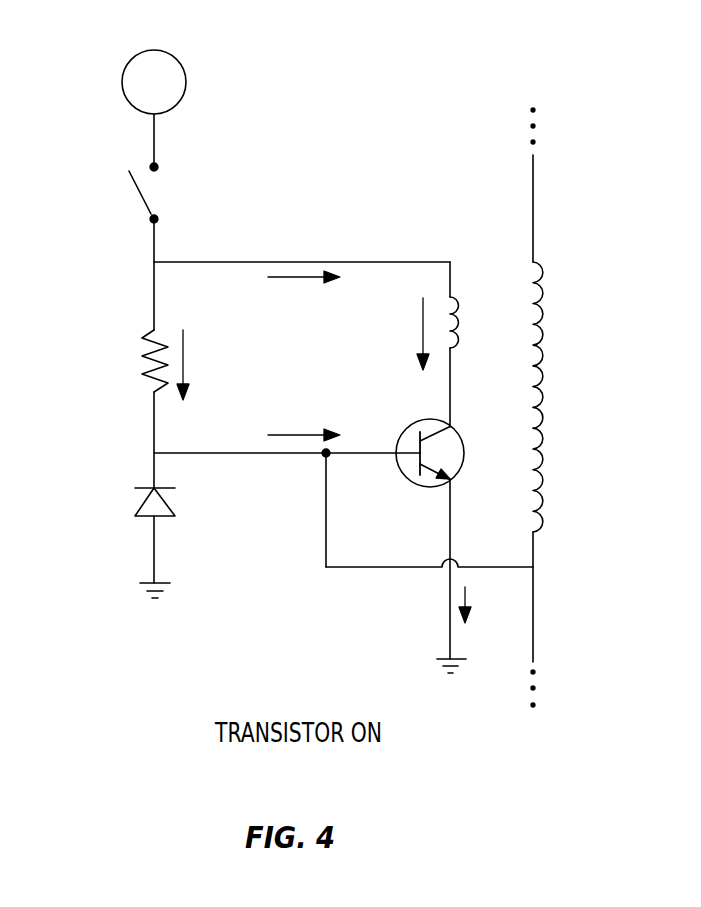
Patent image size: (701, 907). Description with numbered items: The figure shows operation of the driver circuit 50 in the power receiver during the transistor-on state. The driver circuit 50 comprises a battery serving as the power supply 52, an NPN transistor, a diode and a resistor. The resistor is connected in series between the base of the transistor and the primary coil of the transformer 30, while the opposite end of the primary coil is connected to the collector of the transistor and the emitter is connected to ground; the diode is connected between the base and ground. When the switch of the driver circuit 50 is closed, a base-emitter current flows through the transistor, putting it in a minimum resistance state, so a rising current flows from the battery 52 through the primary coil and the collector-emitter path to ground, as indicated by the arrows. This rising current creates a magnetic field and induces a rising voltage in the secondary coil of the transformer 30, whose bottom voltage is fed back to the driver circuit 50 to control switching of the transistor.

The power supply 52 is at (127, 66).
The driver circuit 50 is at (67, 256).
The transformer 30 is at (575, 243).